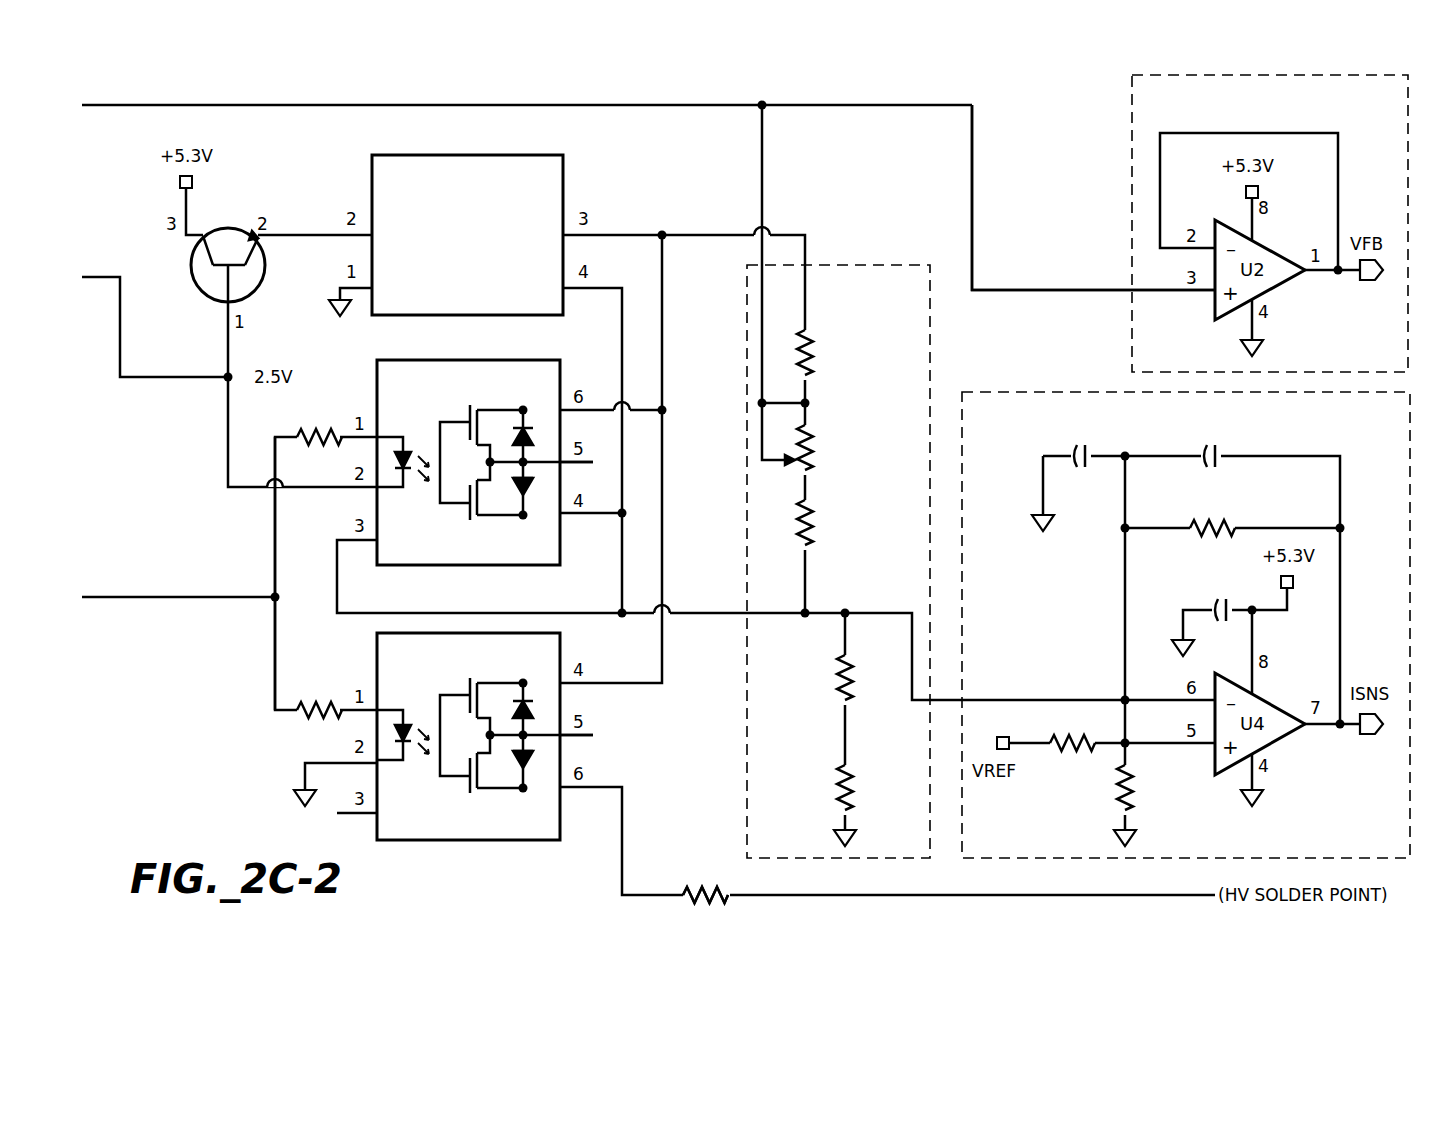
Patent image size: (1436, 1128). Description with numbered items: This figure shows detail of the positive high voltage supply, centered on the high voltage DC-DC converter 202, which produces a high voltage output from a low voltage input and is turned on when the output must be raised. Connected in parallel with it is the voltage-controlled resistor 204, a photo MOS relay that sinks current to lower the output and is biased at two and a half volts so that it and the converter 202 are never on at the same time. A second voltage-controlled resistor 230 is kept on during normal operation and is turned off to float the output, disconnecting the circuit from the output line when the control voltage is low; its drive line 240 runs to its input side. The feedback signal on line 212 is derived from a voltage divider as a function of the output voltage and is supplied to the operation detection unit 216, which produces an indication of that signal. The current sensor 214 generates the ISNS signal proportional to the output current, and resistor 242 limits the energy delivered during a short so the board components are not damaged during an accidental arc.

The DC-DC converter 202 is at (486, 153).
The voltage-controlled resistor 204 is at (518, 567).
The voltage-controlled resistor (float element) 230 is at (455, 842).
The relay control line 240 is at (277, 640).
The resistor 242 is at (712, 888).
The feedback signal line 212 is at (972, 198).
The current sensor 214 is at (848, 265).
The operation detection unit 216 is at (1130, 155).